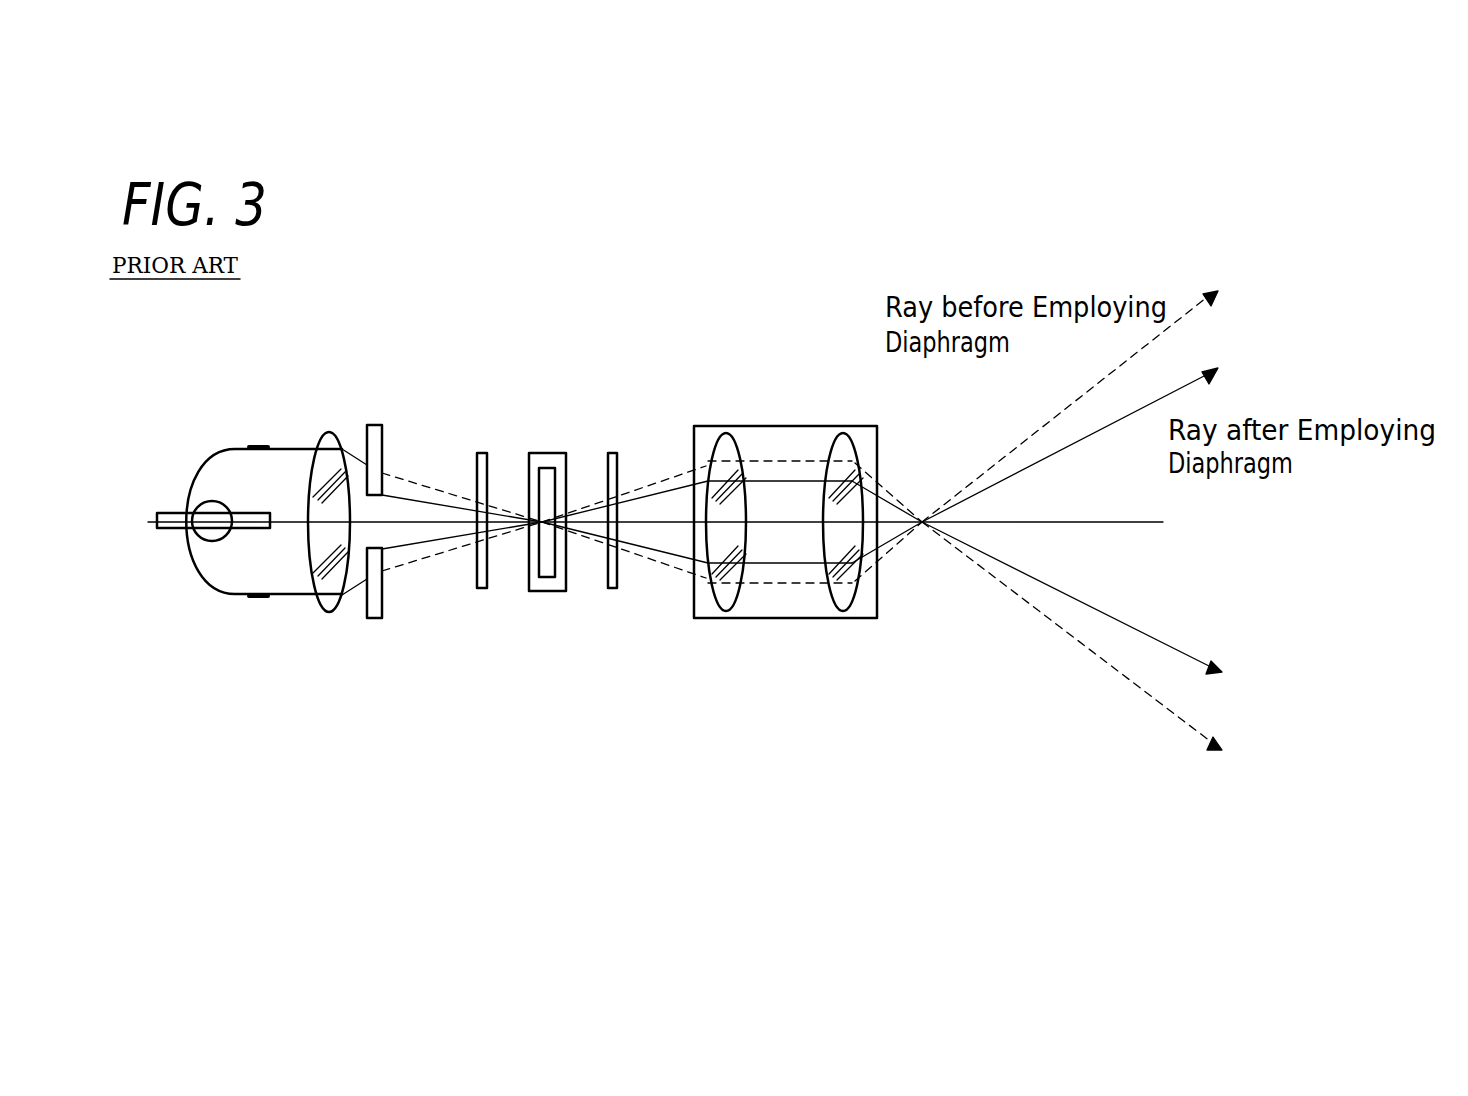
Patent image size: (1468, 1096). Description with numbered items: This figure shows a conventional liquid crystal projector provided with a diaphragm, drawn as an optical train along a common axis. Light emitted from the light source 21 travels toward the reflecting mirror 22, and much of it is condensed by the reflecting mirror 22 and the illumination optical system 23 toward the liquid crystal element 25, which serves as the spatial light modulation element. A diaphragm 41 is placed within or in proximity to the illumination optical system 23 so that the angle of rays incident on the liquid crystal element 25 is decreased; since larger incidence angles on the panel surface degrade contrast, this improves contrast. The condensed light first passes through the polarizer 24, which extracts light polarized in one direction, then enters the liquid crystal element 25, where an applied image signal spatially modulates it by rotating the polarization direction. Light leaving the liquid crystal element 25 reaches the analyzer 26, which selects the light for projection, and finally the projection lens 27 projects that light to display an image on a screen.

The light source 21 is at (212, 539).
The reflecting mirror 22 is at (240, 595).
The illumination optical system 23 is at (330, 612).
The diaphragm 41 is at (376, 425).
The polarizer 24 is at (481, 590).
The liquid crystal element 25 is at (552, 593).
The analyzer 26 is at (614, 590).
The projection lens 27 is at (820, 618).